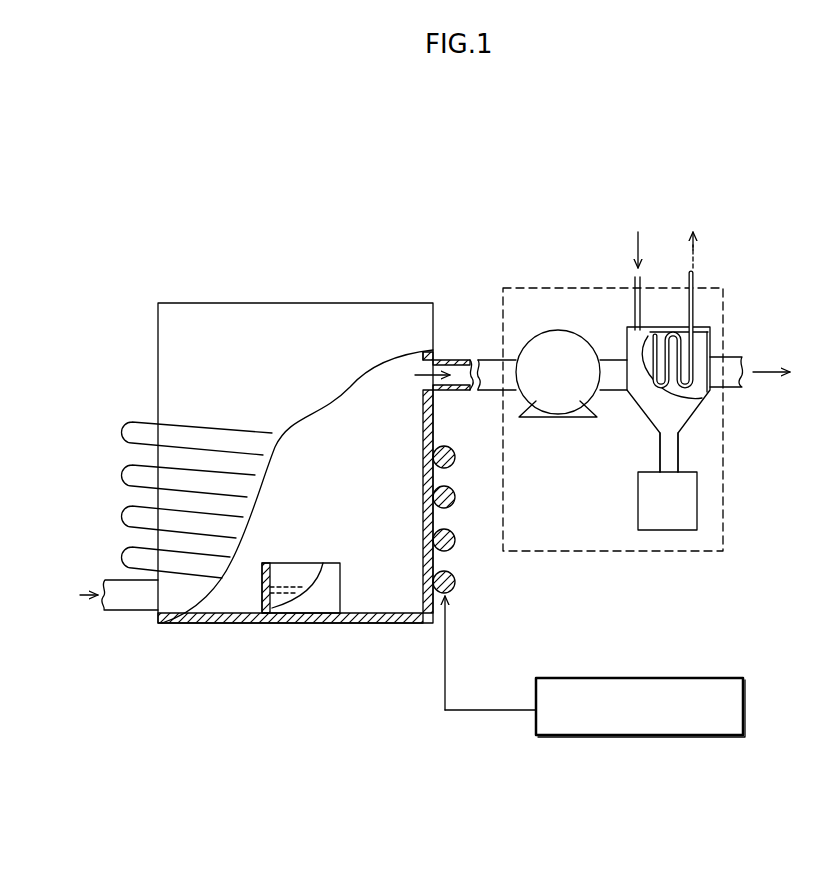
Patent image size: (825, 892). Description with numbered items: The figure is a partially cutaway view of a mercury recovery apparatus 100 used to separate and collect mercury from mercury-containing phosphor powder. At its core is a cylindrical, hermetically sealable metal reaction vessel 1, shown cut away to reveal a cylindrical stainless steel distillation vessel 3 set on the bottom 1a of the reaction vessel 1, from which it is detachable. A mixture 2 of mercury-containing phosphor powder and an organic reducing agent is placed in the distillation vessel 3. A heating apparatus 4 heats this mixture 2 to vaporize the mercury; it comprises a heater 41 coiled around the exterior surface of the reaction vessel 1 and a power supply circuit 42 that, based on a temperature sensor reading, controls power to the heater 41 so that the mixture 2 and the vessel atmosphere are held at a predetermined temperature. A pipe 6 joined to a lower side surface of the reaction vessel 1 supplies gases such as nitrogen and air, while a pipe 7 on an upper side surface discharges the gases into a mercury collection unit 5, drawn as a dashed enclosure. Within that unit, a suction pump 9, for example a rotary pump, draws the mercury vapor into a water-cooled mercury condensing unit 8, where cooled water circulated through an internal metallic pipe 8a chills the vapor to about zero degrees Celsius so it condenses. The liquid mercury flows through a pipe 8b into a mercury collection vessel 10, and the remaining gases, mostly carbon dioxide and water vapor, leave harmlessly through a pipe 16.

The mercury recovery apparatus 100 is at (233, 193).
The reaction vessel 1 is at (302, 320).
The bottom 1a is at (373, 618).
The mixture 2 is at (288, 592).
The distillation vessel 3 is at (258, 603).
The heating apparatus 4 is at (589, 591).
The heater 41 is at (455, 548).
The power supply circuit 42 is at (637, 677).
The mercury collection unit 5 is at (710, 287).
The pipe 6 is at (130, 603).
The pipe 7 is at (455, 357).
The mercury condensing unit 8 is at (632, 333).
The metallic pipe 8a is at (713, 328).
The pipe 8b is at (663, 450).
The suction pump 9 is at (545, 337).
The mercury collection vessel 10 is at (697, 487).
The pipe 16 is at (737, 363).